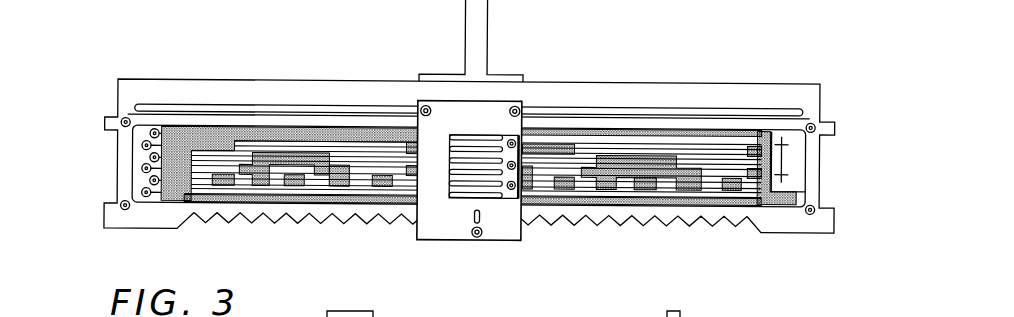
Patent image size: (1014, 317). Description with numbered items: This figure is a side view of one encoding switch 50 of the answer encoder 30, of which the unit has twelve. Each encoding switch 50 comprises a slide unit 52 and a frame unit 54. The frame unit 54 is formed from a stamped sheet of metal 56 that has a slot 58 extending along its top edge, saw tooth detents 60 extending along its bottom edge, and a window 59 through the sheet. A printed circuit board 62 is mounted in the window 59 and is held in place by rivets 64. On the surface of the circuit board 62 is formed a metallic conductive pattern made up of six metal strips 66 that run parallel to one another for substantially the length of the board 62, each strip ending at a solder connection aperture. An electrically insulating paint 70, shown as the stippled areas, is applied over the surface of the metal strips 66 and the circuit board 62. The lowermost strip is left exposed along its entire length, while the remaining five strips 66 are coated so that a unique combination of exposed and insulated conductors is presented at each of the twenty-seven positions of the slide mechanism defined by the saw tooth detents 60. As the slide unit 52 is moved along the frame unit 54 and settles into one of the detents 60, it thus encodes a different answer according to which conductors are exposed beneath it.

The answer encoder 30 is at (448, 225).
The encoding switch 50 is at (333, 226).
The slide unit 52 is at (528, 65).
The frame unit 54 is at (118, 180).
The stamped sheet of metal 56 is at (237, 81).
The slot 58 is at (322, 106).
The window 59 is at (118, 162).
The saw tooth detents 60 is at (385, 216).
The printed circuit board 62 is at (790, 158).
The rivets 64 is at (122, 119).
The metal strips 66 is at (717, 179).
The electrically insulating paint 70 is at (608, 188).